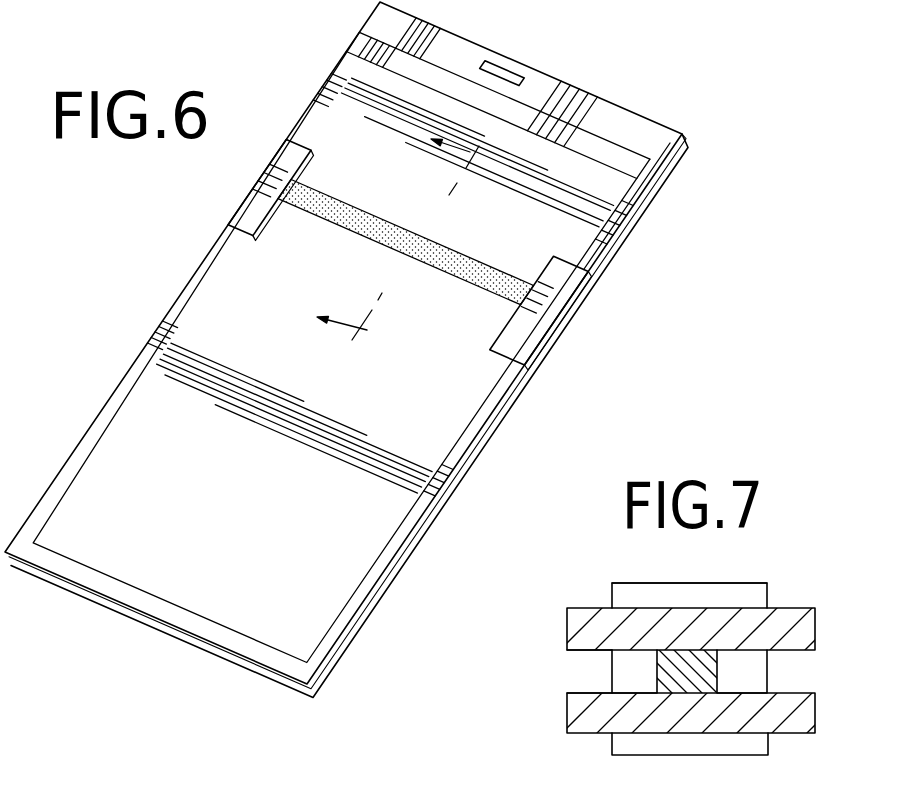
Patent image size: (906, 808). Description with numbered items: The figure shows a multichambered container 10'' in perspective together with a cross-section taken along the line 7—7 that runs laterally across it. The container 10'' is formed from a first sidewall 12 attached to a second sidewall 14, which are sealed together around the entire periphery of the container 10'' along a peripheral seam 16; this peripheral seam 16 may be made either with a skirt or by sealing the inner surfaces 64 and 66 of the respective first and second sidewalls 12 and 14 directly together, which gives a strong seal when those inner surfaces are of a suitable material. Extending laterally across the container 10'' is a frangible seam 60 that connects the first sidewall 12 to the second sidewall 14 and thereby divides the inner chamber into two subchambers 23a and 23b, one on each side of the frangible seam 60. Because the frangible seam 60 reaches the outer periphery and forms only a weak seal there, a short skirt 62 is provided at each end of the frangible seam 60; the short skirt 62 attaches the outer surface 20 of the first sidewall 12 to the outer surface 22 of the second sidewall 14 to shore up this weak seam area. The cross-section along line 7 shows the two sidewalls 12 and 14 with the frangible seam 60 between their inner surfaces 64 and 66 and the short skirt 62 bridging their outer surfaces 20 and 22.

In FIG. 6, the container 10'' is at (343, 343).
In FIG. 6, the first sidewall 12 is at (387, 542).
In FIG. 7, the first sidewall 12 is at (805, 628).
In FIG. 6, the second sidewall 14 is at (326, 694).
In FIG. 7, the second sidewall 14 is at (805, 716).
In FIG. 6, the peripheral seam 16 is at (58, 477).
In FIG. 6, the first sidewall outer surface 20 is at (443, 359).
In FIG. 7, the first sidewall outer surface 20 is at (783, 605).
In FIG. 7, the second sidewall outer surface 22 is at (806, 735).
In FIG. 6, the subchamber 23a is at (400, 470).
In FIG. 6, the subchamber 23b is at (573, 220).
In FIG. 6, the frangible seam 60 is at (322, 195).
In FIG. 7, the frangible seam 60 is at (668, 665).
In FIG. 6, the short skirt 62 is at (548, 313).
In FIG. 7, the short skirt 62 is at (742, 590).
In FIG. 7, the inner surface of first sidewall 64 is at (578, 653).
In FIG. 7, the inner surface of second sidewall 66 is at (580, 690).
In FIG. 6, the section line 7— 7 is at (408, 251).